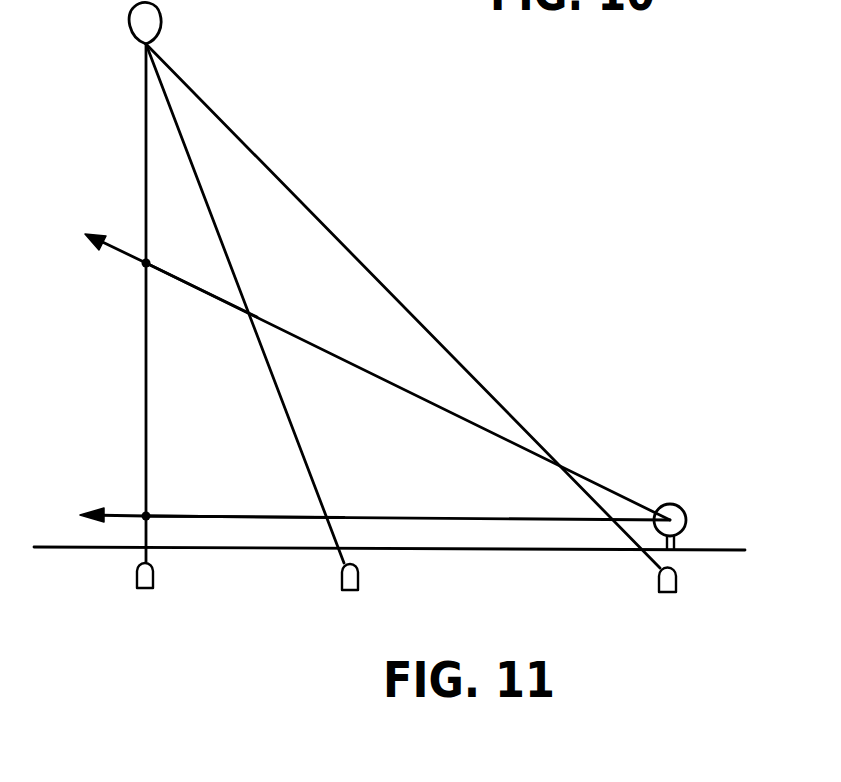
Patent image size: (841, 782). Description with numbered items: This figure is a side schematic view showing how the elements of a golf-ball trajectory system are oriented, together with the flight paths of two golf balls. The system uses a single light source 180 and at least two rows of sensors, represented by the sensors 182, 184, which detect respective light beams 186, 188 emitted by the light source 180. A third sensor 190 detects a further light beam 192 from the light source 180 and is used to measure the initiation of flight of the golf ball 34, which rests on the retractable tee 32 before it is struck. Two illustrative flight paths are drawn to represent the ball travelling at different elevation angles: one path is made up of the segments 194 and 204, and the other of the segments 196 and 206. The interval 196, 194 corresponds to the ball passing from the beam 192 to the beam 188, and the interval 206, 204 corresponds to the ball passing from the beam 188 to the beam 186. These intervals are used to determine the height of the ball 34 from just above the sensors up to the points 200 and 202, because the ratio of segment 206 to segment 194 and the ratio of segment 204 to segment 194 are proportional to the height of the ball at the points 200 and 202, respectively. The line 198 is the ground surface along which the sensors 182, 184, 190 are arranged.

The retractable tee 32 is at (677, 547).
The golf ball 34 is at (681, 505).
The light source 180 is at (163, 24).
The sensor 182 is at (155, 580).
The sensor 184 is at (340, 583).
The light beam 186 is at (146, 176).
The light beam 188 is at (236, 265).
The third sensor 190 is at (658, 581).
The light beam 192 is at (496, 393).
The flight path 194 is at (388, 513).
The flight path 196 is at (370, 371).
The ground line 198 is at (483, 552).
The point 200 is at (146, 265).
The point 202 is at (141, 511).
The flight path 204 is at (225, 513).
The flight path 206 is at (198, 290).